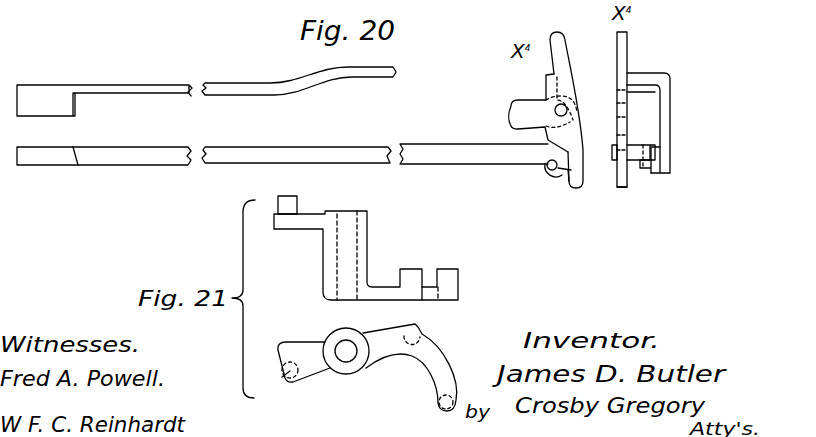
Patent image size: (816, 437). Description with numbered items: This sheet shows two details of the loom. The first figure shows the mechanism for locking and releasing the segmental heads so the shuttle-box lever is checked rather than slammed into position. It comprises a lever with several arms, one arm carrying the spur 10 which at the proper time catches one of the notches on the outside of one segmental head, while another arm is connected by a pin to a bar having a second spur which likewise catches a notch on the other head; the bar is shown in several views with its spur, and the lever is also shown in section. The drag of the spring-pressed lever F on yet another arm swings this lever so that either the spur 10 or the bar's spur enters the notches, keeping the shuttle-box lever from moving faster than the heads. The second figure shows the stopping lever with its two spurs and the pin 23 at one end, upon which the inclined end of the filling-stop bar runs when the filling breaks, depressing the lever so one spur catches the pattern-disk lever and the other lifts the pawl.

In FIG. 20, the spur 10 is at (569, 173).
In FIG. 21, the pin 23 is at (284, 377).